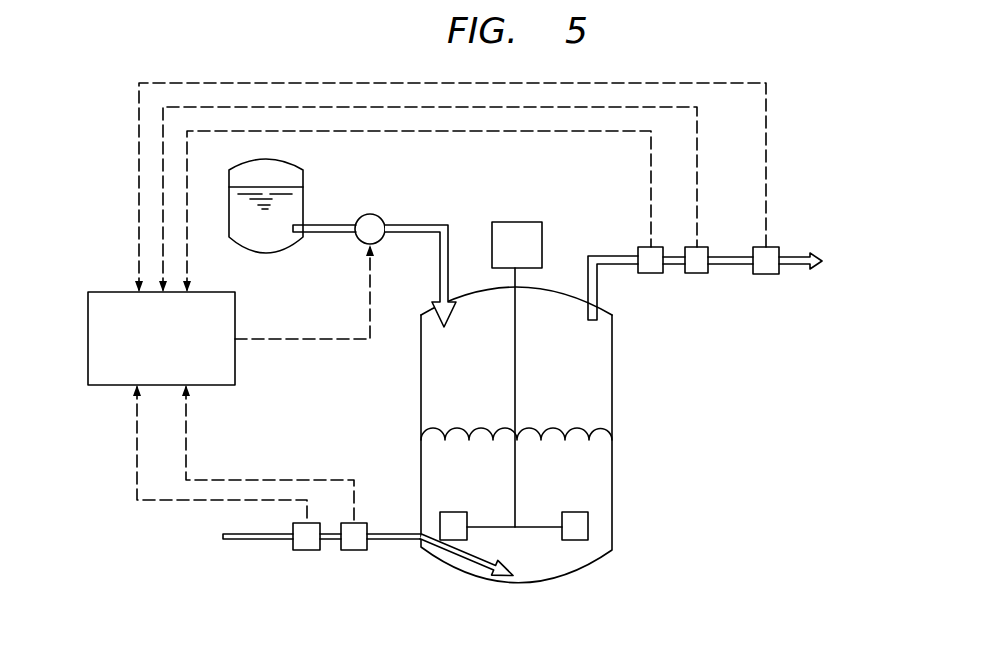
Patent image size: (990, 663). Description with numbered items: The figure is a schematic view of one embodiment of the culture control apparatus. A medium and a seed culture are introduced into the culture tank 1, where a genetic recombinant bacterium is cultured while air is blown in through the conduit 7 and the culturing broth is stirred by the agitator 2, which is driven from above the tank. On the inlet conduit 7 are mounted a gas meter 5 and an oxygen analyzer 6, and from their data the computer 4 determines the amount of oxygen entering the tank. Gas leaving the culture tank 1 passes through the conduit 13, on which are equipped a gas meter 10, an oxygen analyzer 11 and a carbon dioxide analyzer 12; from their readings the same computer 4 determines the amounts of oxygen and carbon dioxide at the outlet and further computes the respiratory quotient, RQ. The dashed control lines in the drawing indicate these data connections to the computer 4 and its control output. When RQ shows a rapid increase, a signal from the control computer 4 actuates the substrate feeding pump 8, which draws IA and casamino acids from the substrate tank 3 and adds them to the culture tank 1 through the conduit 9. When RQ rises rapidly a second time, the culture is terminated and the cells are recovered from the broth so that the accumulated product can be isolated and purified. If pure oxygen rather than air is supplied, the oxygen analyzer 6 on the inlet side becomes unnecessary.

The culture tank 1 is at (613, 419).
The agitator 2 is at (525, 222).
The substrate tank 3 is at (305, 177).
The computer 4 is at (105, 292).
The gas meter 5 is at (306, 551).
The oxygen analyzer 6 is at (354, 551).
The conduit 7 is at (258, 541).
The substrate feeding pump 8 is at (370, 214).
The conduit 9 is at (418, 224).
The gas meter 10 is at (650, 274).
The oxygen analyzer 11 is at (697, 274).
The carbon dioxide analyzer 12 is at (767, 275).
The conduit 13 is at (796, 257).